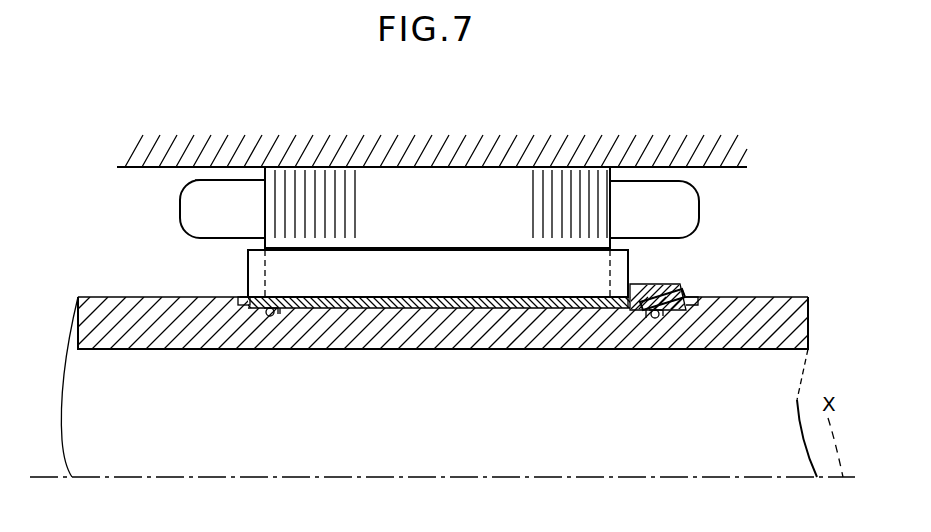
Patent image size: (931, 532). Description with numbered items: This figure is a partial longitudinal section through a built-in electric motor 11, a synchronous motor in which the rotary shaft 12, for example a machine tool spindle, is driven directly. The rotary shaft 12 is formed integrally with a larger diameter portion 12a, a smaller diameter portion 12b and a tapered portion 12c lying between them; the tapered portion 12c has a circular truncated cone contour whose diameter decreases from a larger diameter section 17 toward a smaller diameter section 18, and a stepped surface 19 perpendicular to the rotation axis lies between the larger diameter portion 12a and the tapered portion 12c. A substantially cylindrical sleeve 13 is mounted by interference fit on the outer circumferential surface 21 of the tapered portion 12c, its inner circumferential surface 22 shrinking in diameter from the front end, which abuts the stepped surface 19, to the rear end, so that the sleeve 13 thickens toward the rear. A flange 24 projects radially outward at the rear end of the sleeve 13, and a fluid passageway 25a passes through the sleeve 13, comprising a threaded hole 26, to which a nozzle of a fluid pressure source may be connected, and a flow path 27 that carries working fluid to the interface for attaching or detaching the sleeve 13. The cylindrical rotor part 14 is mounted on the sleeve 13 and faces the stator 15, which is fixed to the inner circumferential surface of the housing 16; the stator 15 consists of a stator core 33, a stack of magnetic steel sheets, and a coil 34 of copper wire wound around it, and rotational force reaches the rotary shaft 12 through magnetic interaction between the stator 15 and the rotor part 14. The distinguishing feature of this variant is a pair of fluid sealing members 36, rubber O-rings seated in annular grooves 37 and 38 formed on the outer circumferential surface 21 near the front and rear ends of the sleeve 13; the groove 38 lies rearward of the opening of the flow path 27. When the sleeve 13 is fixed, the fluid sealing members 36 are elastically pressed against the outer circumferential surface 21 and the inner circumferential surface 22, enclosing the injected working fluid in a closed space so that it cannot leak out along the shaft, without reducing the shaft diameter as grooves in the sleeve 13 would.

The electric motor 11 is at (85, 204).
The rotary shaft 12 is at (75, 294).
The larger diameter portion 12a is at (125, 296).
The smaller diameter portion 12b is at (808, 296).
The tapered portion 12c is at (360, 350).
The sleeve 13 is at (234, 293).
The rotor part 14 is at (485, 246).
The stator 15 is at (702, 203).
The housing 16 is at (747, 167).
The larger diameter section 17 is at (243, 306).
The smaller diameter section 18 is at (690, 310).
The stepped surface 19 is at (242, 295).
The outer circumferential surface 21 is at (465, 306).
The inner circumferential surface 22 is at (410, 297).
The flange 24 is at (646, 285).
The fluid passageway 25a is at (684, 289).
The threaded hole 26 is at (690, 301).
The flow path 27 is at (625, 310).
The stator core 33 is at (258, 166).
The coil 34 is at (205, 179).
The fluid sealing member 36 is at (270, 317).
The annular groove 37 is at (278, 318).
The annular groove 38 is at (648, 318).